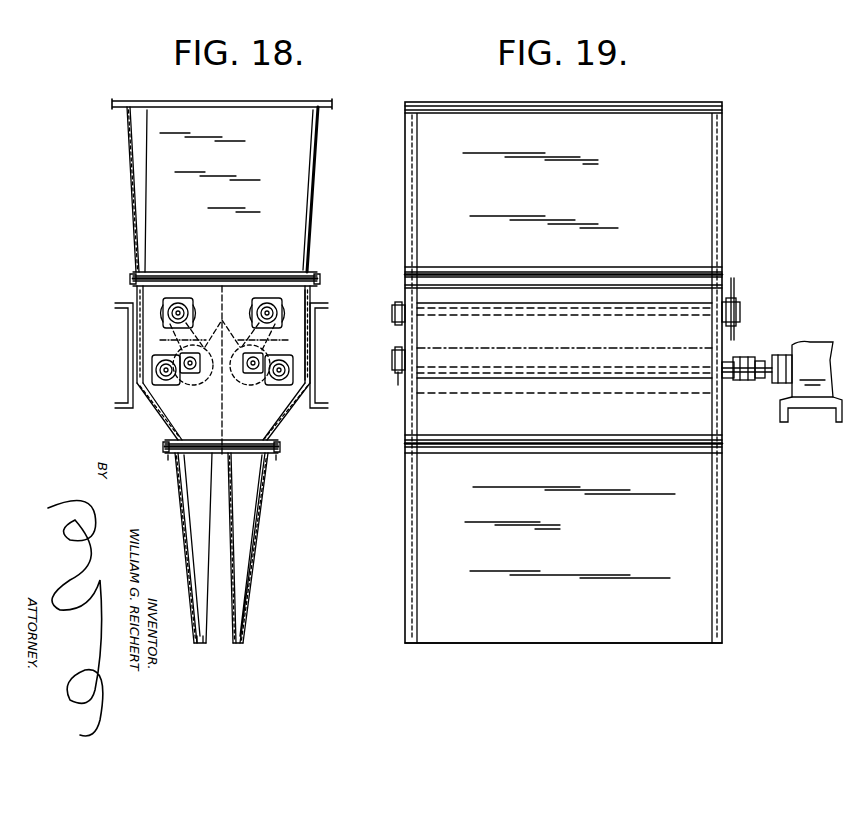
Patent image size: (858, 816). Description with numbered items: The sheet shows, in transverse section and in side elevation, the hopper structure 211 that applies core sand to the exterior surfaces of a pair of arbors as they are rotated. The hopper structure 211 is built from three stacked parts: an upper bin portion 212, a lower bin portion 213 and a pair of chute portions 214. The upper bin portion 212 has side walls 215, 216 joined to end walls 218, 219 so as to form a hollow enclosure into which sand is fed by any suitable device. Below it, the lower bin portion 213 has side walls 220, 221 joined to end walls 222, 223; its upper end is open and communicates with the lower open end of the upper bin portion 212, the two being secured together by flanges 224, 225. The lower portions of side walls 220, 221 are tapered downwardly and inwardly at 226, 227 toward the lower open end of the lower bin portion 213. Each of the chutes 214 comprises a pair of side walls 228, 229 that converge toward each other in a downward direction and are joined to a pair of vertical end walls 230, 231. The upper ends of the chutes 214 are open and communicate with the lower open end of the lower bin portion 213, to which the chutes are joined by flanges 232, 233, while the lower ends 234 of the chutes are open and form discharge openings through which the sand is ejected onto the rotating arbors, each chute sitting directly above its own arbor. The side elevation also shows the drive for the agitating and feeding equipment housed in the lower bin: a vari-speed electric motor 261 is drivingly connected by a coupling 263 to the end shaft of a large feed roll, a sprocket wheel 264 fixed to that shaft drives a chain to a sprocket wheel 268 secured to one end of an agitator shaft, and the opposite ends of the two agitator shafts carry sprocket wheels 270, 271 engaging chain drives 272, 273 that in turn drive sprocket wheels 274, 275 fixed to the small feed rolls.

In FIG. 18, the hopper structure 211 is at (131, 230).
In FIG. 18, the upper bin portion 212 is at (131, 190).
In FIG. 18, the lower bin portion 213 is at (130, 345).
In FIG. 18, the chute portions 214 is at (184, 556).
In FIG. 18, the side wall 215 is at (127, 150).
In FIG. 18, the side wall 216 is at (322, 162).
In FIG. 18, the end wall 218 is at (285, 217).
In FIG. 19, the end wall 219 is at (405, 238).
In FIG. 18, the side wall 220 is at (130, 365).
In FIG. 18, the side wall 221 is at (312, 348).
In FIG. 18, the end wall 222 is at (300, 338).
In FIG. 19, the end wall 223 is at (398, 348).
In FIG. 18, the flange 224 is at (133, 278).
In FIG. 18, the flange 225 is at (133, 285).
In FIG. 18, the tapered portion 226 is at (160, 418).
In FIG. 18, the tapered portion 227 is at (292, 418).
In FIG. 19, the tapered portion 227 is at (417, 420).
In FIG. 18, the chute side wall 228 is at (180, 496).
In FIG. 18, the chute side wall 229 is at (212, 590).
In FIG. 18, the vertical end wall 230 is at (196, 472).
In FIG. 19, the vertical end wall 231 is at (405, 575).
In FIG. 18, the flange 232 is at (275, 448).
In FIG. 19, the flange 232 is at (552, 437).
In FIG. 18, the flange 233 is at (170, 452).
In FIG. 18, the lower end 234 is at (200, 645).
In FIG. 19, the vari-speed electric motor 261 is at (806, 350).
In FIG. 19, the coupling 263 is at (746, 358).
In FIG. 19, the sprocket wheel 264 is at (730, 376).
In FIG. 19, the sprocket wheel 268 is at (734, 292).
In FIG. 18, the sprocket wheel 270 is at (182, 297).
In FIG. 18, the sprocket wheel 271 is at (270, 297).
In FIG. 19, the sprocket wheel 271 is at (397, 304).
In FIG. 18, the chain drive 272 is at (165, 346).
In FIG. 18, the chain drive 273 is at (247, 298).
In FIG. 18, the sprocket wheel 274 is at (192, 376).
In FIG. 18, the sprocket wheel 275 is at (251, 376).
In FIG. 19, the sprocket wheel 275 is at (400, 380).